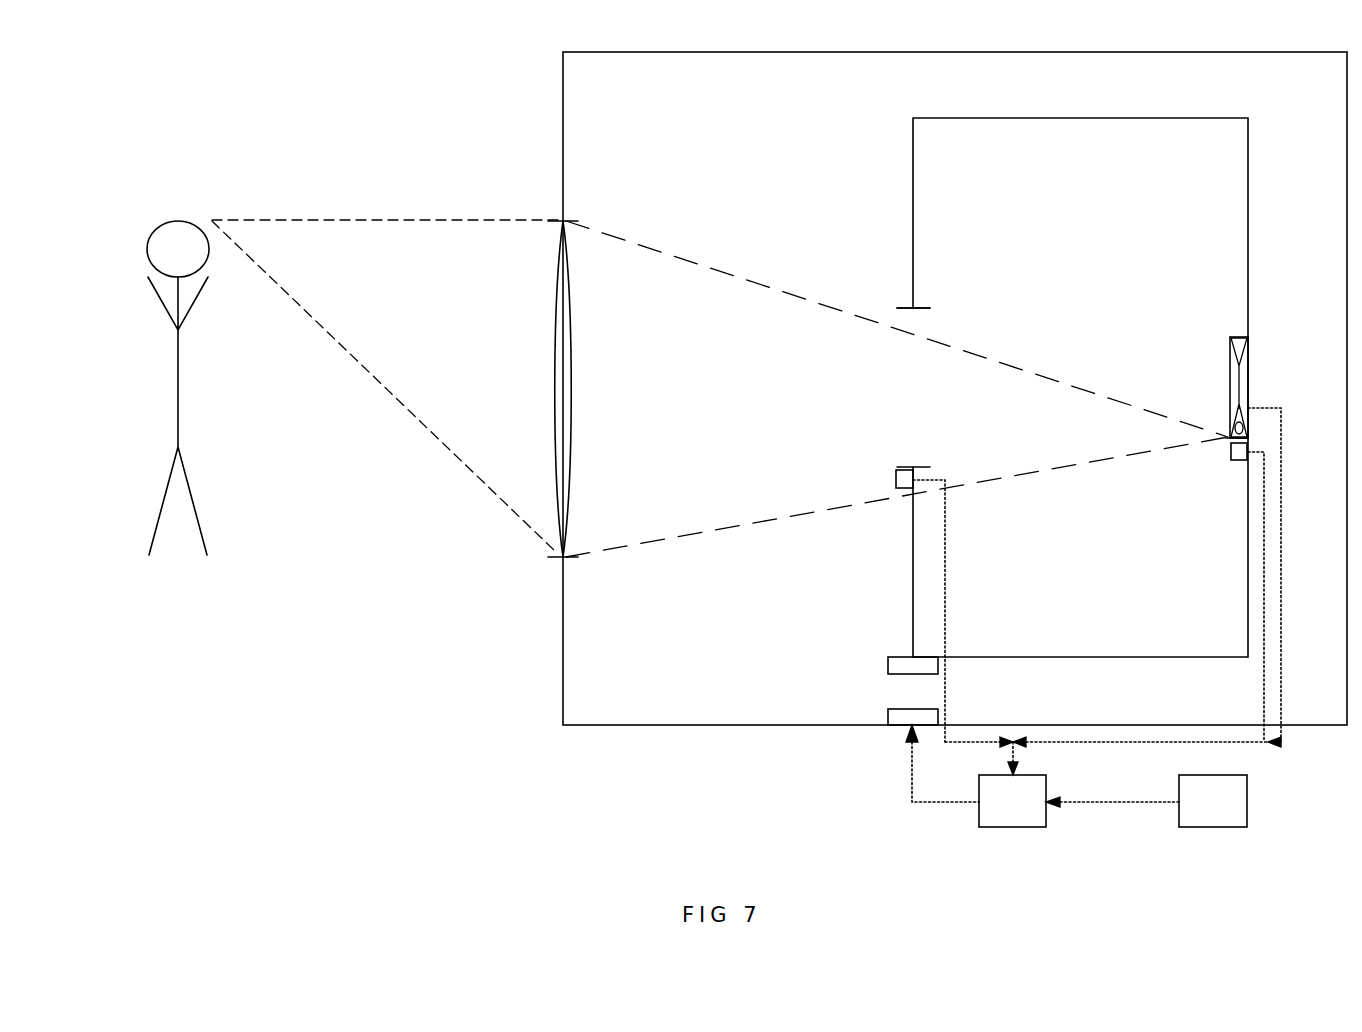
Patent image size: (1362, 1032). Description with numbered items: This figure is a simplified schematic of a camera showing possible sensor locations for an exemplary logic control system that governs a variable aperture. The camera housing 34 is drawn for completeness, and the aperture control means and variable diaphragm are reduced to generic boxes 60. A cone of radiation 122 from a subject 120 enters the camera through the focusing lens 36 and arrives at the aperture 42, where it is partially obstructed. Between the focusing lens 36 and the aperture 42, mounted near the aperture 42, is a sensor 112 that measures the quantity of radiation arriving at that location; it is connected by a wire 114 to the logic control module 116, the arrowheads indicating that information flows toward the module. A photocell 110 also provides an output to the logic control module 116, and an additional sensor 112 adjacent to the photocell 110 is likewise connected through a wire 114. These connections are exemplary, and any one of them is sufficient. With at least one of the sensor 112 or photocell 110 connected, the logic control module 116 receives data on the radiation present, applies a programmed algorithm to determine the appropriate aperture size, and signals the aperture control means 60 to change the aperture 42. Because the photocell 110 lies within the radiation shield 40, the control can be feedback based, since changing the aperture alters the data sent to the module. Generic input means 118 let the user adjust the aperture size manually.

The camera housing 34 is at (814, 52).
The focusing lens 36 is at (556, 548).
The radiation shield 40 is at (930, 118).
The aperture 42 is at (920, 322).
The aperture control means 60 is at (888, 664).
The photocell 110 is at (1245, 392).
The sensor 112 is at (1224, 462).
The wire 114 is at (1110, 742).
The logic control module 116 is at (1032, 813).
The input means 118 is at (1233, 813).
The person 120 is at (197, 260).
The cone of radiation 122 is at (277, 220).